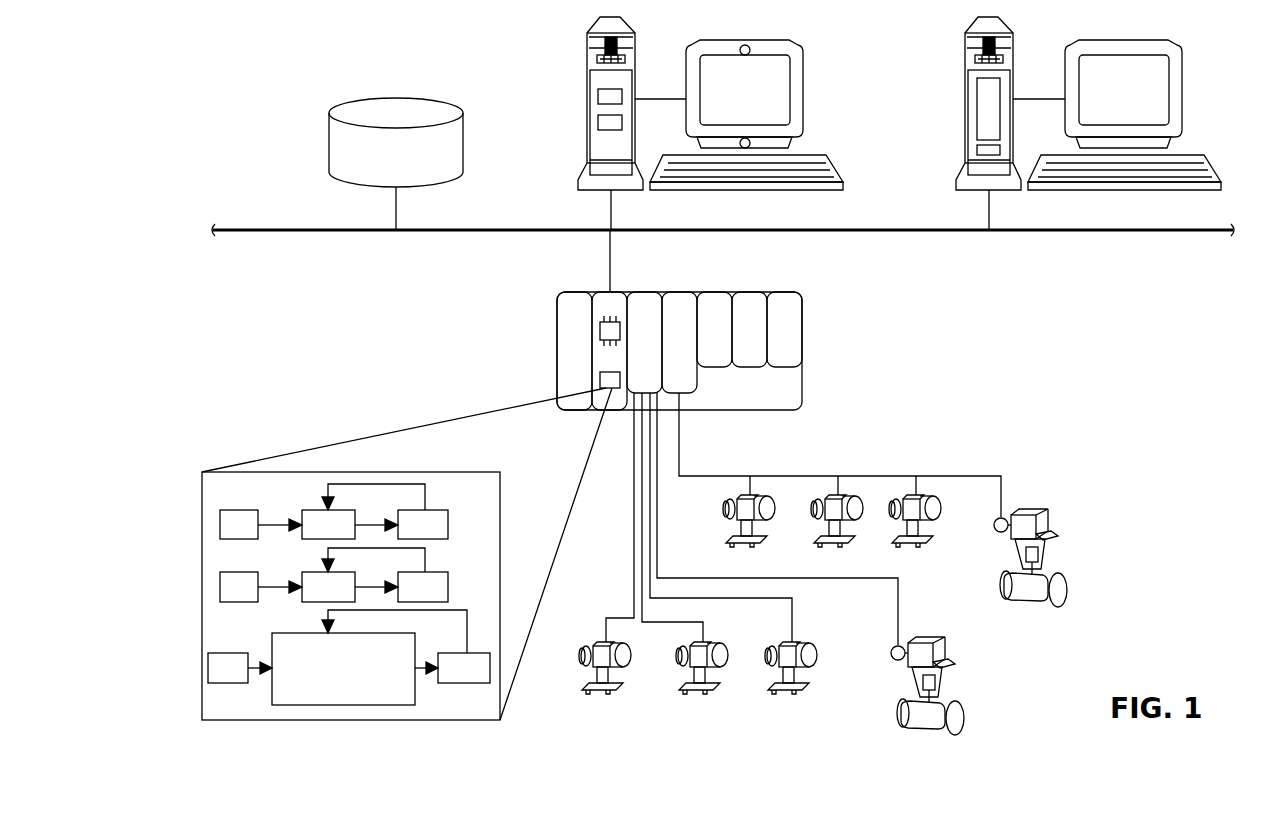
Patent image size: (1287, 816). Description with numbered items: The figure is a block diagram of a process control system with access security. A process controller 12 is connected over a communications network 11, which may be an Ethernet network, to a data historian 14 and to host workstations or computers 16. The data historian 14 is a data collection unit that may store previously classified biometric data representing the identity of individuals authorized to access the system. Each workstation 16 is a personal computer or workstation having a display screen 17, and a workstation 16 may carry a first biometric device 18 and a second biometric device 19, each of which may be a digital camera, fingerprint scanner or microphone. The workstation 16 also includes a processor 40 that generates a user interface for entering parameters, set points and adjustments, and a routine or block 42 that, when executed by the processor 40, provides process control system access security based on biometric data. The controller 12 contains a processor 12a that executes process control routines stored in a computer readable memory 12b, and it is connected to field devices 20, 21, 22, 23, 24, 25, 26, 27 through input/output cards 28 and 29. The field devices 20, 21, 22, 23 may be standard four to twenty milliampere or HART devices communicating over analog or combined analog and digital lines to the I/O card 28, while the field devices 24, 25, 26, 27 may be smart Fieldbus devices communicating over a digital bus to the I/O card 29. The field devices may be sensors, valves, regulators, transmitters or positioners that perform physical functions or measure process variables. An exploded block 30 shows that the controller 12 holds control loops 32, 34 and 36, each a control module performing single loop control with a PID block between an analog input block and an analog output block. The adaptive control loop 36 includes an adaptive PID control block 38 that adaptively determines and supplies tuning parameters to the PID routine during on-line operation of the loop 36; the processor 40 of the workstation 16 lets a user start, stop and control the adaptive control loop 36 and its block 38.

The communications network 11 is at (945, 232).
The process controller 12 is at (602, 305).
The processor 12a is at (600, 330).
The computer readable memory 12b is at (600, 380).
The data historian 14 is at (463, 143).
The host workstation 16 is at (587, 60).
The display screen 17 is at (803, 80).
The first biometric device 18 is at (745, 45).
The second biometric device 19 is at (750, 143).
The field device 20 is at (600, 694).
The field device 21 is at (697, 694).
The field device 22 is at (786, 694).
The field device 23 is at (912, 673).
The field device 24 is at (753, 493).
The field device 25 is at (840, 493).
The field device 26 is at (920, 493).
The field device 27 is at (1033, 508).
The input/output card 28 is at (635, 305).
The input/output card 29 is at (672, 305).
The exploded block 30 is at (472, 472).
The control loop 32 is at (210, 520).
The control loop 34 is at (210, 584).
The adaptive control loop 36 is at (206, 699).
The adaptive PID control block 38 is at (362, 705).
The processor 40 is at (598, 123).
The block 42 is at (598, 96).